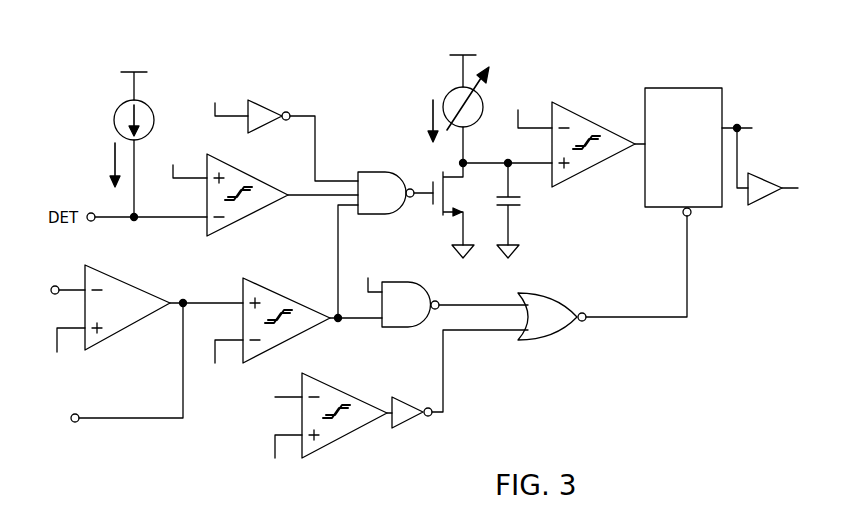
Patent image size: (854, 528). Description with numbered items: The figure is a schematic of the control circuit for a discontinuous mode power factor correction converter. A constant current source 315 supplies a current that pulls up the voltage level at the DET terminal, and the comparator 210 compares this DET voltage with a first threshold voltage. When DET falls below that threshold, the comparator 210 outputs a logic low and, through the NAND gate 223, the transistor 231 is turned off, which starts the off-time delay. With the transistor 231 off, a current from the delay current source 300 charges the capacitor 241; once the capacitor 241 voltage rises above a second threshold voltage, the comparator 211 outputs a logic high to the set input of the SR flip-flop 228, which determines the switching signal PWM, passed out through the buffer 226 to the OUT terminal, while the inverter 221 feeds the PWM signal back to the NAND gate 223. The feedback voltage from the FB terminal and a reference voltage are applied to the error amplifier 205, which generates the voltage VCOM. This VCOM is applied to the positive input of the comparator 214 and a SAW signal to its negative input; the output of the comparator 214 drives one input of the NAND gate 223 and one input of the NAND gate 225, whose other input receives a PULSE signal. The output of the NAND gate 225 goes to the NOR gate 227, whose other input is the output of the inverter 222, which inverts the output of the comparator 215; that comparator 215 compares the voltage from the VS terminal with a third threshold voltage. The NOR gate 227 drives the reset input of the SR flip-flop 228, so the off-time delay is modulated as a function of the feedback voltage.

The error amplifier 205 is at (144, 278).
The comparator 210 is at (255, 210).
The comparator 211 is at (591, 172).
The comparator 214 is at (302, 338).
The comparator 215 is at (332, 448).
The inverter 221 is at (276, 96).
The inverter 222 is at (415, 430).
The NAND gate 223 is at (383, 161).
The NAND gate 225 is at (400, 333).
The buffer 226 is at (760, 205).
The NOR gate 227 is at (562, 338).
The SR flip-flop 228 is at (686, 86).
The transistor 231 is at (432, 221).
The capacitor 241 is at (520, 205).
The delay current source 300 is at (441, 96).
The constant current source 315 is at (110, 91).